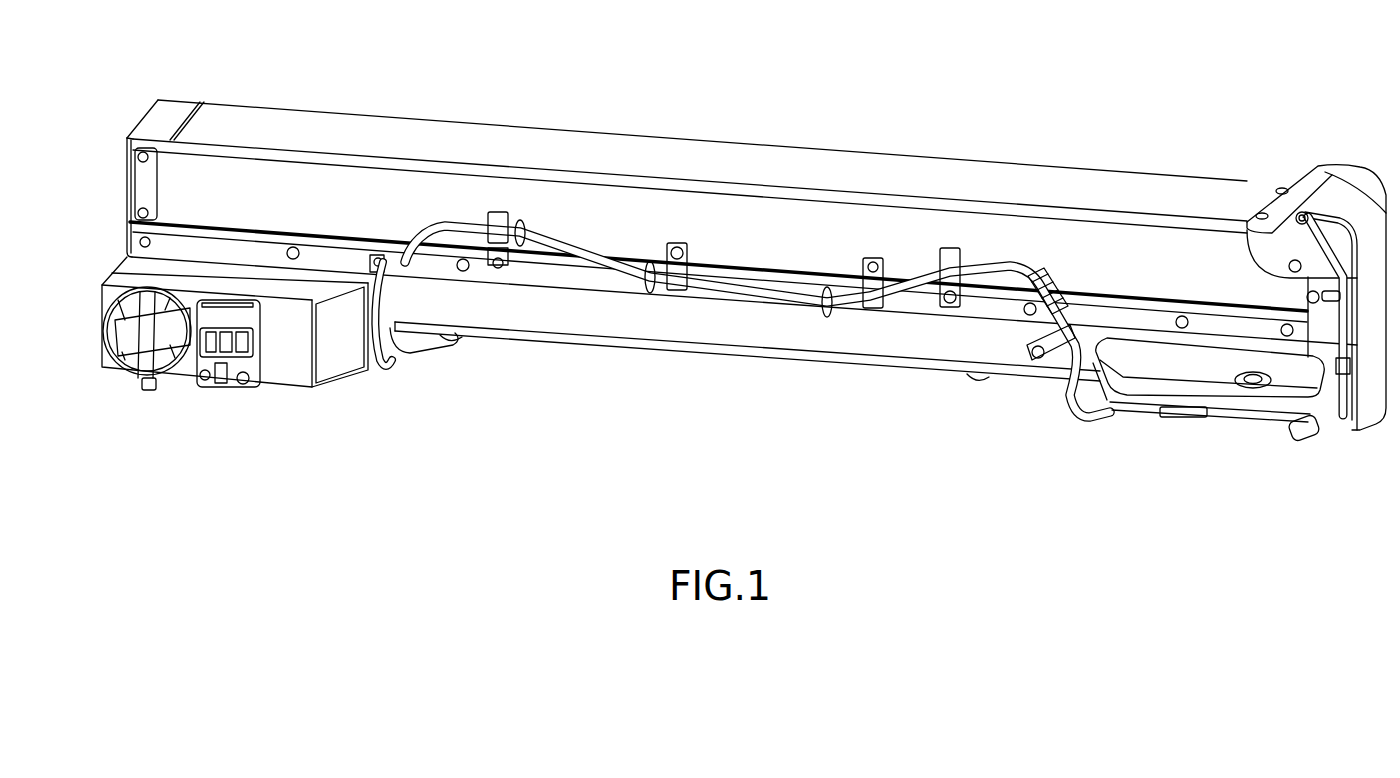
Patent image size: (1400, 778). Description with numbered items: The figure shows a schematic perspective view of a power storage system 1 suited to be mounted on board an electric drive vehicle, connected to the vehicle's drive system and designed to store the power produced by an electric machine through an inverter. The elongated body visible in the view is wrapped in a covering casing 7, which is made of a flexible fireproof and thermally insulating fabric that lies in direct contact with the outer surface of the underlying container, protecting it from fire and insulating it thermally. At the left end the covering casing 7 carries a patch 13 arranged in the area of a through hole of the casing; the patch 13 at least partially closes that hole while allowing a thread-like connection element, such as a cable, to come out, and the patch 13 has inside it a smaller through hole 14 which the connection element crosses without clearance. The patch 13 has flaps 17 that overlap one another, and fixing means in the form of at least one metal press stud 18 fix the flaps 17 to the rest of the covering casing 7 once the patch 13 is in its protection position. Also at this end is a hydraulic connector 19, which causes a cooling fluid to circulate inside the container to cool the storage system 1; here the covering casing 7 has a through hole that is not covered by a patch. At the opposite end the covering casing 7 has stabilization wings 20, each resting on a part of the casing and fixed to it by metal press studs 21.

The power storage system 1 is at (717, 112).
The covering casing 7 is at (308, 120).
The patch 13 is at (253, 320).
The through hole 14 is at (213, 355).
The flaps 17 is at (222, 380).
The metal press stud 18 is at (243, 384).
The hydraulic connector 19 is at (145, 390).
The stabilization wings 20 is at (1330, 178).
The metal press studs 21 is at (138, 157).